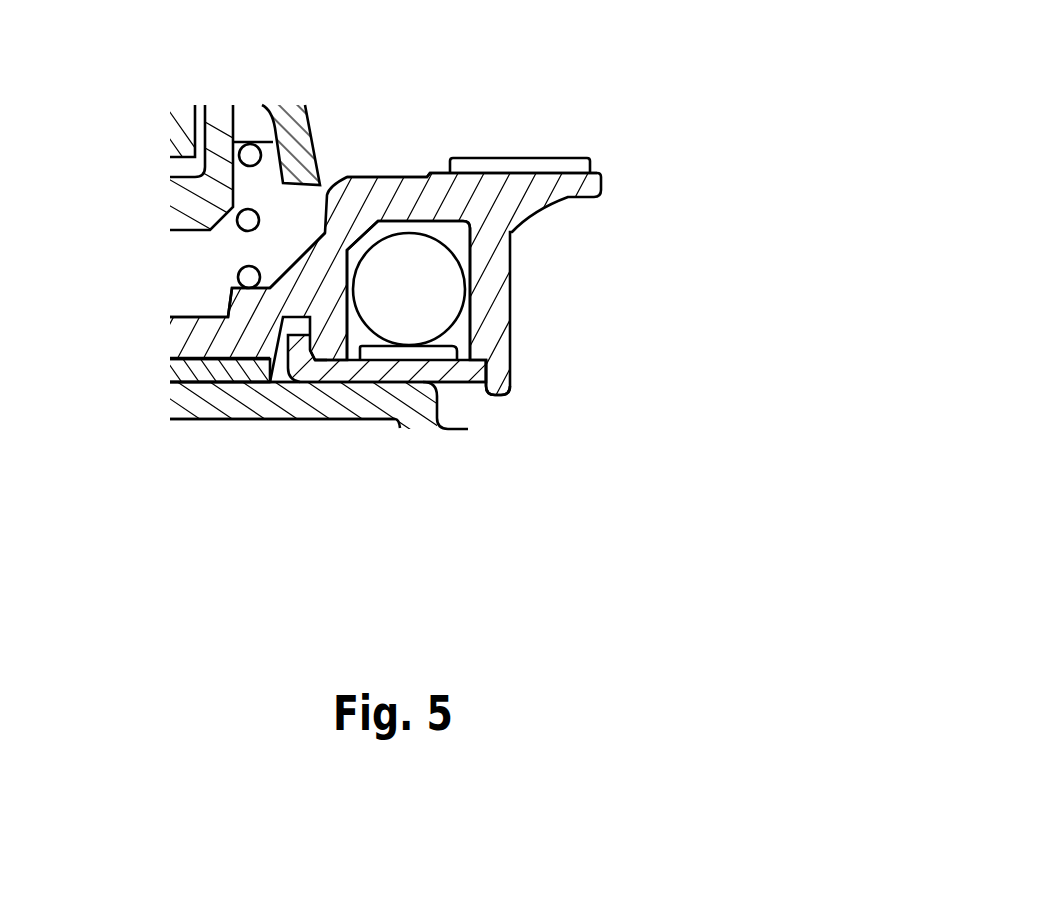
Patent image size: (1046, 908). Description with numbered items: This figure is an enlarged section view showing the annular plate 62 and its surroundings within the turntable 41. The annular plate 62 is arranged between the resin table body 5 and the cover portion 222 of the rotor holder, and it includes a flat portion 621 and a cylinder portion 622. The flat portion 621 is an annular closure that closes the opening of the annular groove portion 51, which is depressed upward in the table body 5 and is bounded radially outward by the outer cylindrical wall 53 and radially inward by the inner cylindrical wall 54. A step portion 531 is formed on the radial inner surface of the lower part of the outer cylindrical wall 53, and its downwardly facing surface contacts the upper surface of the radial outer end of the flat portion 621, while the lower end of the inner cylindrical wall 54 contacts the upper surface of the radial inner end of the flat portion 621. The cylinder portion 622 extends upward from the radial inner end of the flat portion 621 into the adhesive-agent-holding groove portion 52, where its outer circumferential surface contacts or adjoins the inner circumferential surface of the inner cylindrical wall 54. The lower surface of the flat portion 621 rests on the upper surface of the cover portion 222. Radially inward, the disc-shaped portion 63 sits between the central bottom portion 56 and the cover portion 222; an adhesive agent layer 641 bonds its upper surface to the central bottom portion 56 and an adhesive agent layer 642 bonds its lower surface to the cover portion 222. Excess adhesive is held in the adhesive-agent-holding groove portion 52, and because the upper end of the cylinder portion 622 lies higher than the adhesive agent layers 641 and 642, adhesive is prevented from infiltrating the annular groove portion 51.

The table body 5 is at (443, 153).
The turntable 41 is at (607, 105).
The annular groove portion 51 is at (427, 322).
The adhesive-agent-holding groove portion 52 is at (285, 363).
The outer cylindrical wall 53 is at (493, 284).
The step portion 531 is at (463, 373).
The inner cylindrical wall 54 is at (348, 330).
The central bottom portion 56 is at (207, 330).
The annular plate 62 is at (313, 493).
The disc-shaped portion 63 is at (188, 368).
The cover portion 222 is at (345, 392).
The flat portion 621 is at (392, 380).
The cylinder portion 622 is at (287, 384).
The adhesive agent layer 641 is at (188, 357).
The adhesive agent layer 642 is at (193, 390).